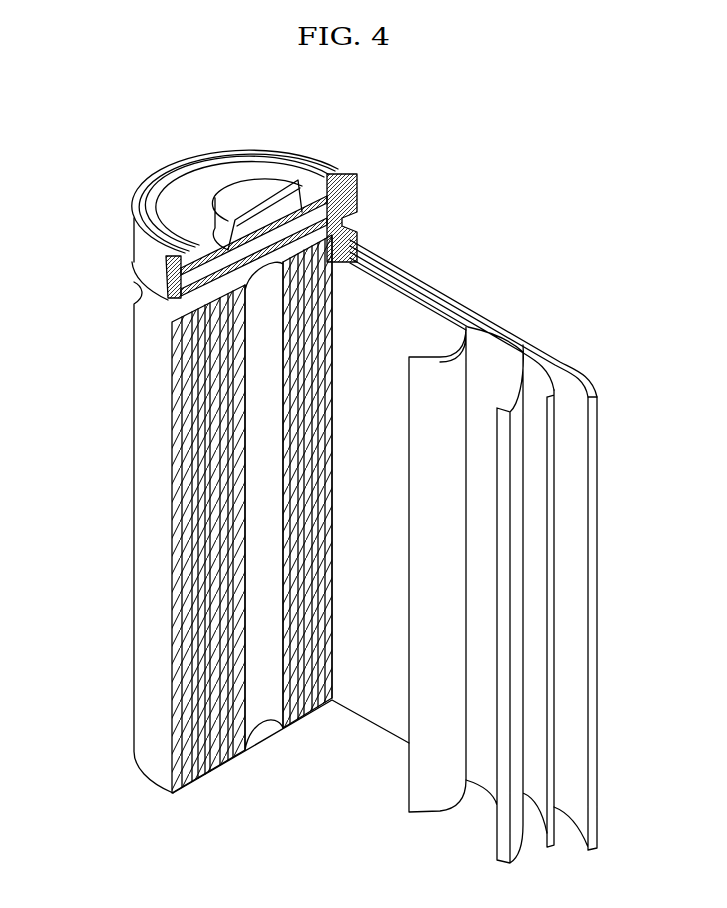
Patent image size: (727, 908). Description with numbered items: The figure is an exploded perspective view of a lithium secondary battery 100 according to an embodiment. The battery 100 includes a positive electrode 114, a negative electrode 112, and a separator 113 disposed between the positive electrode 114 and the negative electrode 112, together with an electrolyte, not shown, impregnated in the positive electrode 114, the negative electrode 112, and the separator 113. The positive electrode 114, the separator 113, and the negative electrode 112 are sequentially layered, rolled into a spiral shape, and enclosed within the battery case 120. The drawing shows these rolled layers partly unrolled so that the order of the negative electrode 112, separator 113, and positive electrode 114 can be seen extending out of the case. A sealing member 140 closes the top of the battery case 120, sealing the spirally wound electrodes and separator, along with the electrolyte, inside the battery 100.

The lithium secondary battery 100 is at (321, 100).
The negative electrode 112 is at (575, 370).
The separator 113 is at (438, 362).
The positive electrode 114 is at (510, 367).
The battery case 120 is at (141, 511).
The sealing member 140 is at (240, 188).